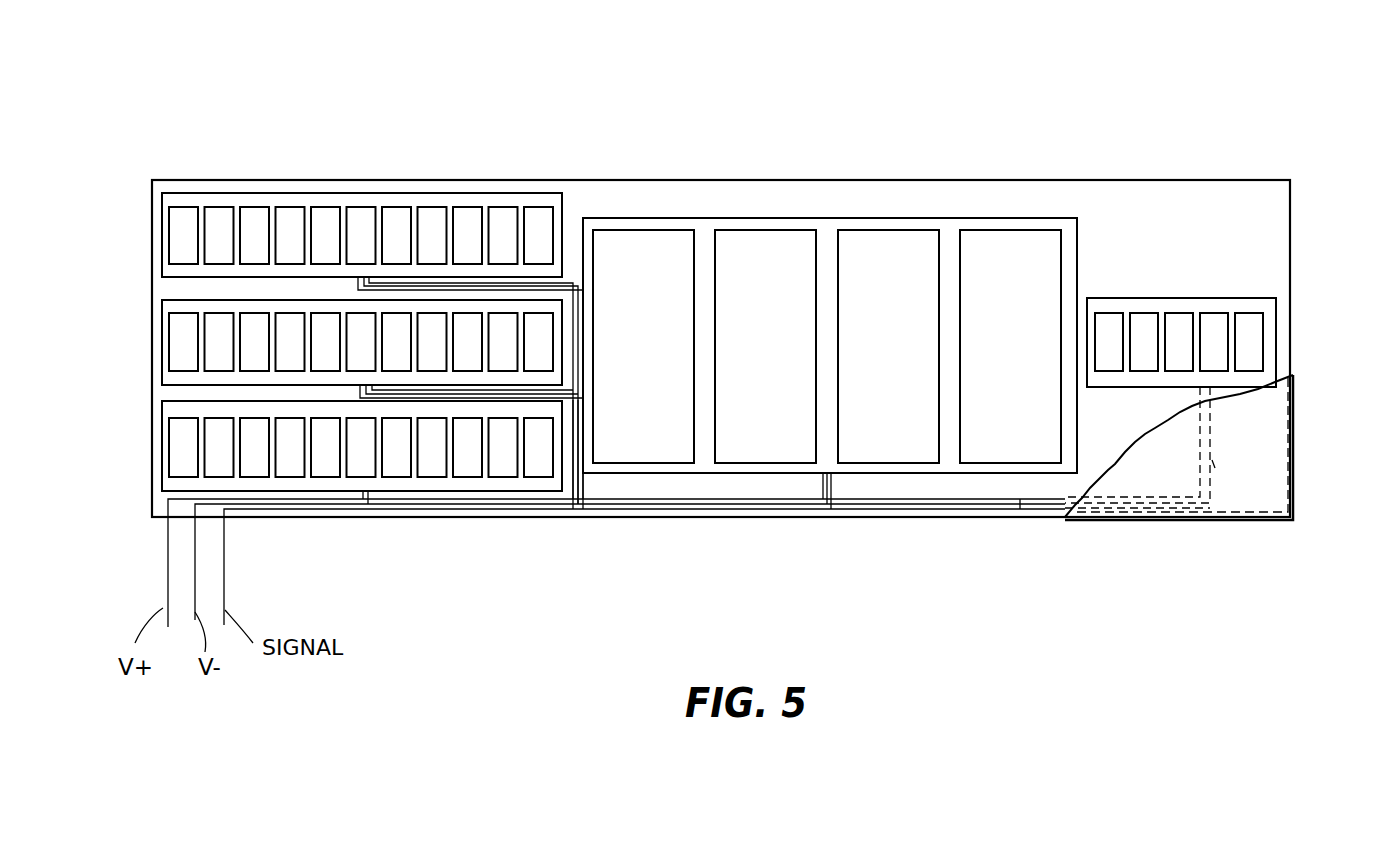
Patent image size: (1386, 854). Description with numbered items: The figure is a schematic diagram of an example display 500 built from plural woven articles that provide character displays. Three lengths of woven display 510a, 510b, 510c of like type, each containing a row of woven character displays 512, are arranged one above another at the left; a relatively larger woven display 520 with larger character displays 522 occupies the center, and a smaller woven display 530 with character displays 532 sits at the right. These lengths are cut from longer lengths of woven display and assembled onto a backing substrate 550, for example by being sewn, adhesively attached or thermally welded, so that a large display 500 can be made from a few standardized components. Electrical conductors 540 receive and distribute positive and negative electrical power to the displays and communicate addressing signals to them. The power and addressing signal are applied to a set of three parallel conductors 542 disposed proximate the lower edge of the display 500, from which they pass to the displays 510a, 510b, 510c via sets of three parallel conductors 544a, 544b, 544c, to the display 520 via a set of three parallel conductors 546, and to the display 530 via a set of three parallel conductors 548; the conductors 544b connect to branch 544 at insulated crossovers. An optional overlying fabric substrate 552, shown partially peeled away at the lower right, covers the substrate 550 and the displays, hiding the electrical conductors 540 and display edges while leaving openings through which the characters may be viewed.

The display 500 is at (224, 126).
The display 510a is at (158, 240).
The display 510b is at (158, 350).
The display 510c is at (158, 450).
The character display 512 is at (395, 214).
The woven article 520 is at (704, 212).
The character display 522 is at (665, 340).
The woven article 530 is at (1282, 303).
The character display 532 is at (1215, 356).
The electrical conductors 540 is at (746, 514).
The parallel conductors 542 is at (1018, 500).
The branch 544 is at (580, 480).
The parallel conductors 544a is at (462, 288).
The parallel conductors 544b is at (402, 400).
The parallel conductors 544c is at (365, 493).
The parallel conductors 546 is at (835, 485).
The parallel conductors 548 is at (1215, 468).
The backing substrate 550 is at (1290, 181).
The fabric substrate 552 is at (1293, 575).